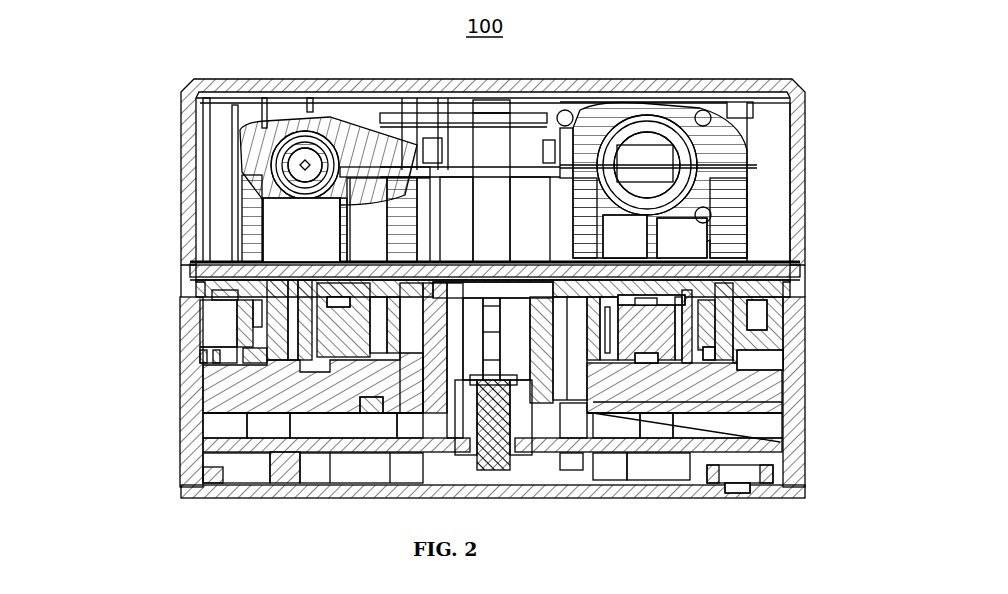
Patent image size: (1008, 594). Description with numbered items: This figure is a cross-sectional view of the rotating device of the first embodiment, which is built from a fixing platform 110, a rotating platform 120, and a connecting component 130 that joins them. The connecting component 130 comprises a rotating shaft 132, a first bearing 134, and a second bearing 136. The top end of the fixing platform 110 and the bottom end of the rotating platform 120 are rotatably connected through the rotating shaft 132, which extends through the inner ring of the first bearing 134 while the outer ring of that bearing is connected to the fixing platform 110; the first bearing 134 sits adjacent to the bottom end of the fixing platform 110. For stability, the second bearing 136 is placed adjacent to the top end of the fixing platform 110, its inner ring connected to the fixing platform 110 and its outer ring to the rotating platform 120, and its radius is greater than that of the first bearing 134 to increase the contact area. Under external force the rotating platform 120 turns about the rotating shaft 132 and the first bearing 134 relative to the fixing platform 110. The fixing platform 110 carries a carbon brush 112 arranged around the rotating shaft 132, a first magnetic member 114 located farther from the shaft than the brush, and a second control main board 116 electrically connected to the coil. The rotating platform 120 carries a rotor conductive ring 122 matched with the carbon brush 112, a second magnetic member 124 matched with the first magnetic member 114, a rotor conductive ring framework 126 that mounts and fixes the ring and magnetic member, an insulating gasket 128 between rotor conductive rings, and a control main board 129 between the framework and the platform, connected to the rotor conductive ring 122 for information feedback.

The fixing platform 110 is at (165, 303).
The carbon brush 112 is at (783, 403).
The first magnetic member 114 is at (805, 338).
The second control main board 116 is at (357, 452).
The rotating platform 120 is at (166, 216).
The rotor conductive ring 122 is at (590, 385).
The second magnetic member 124 is at (727, 303).
The rotor conductive ring framework 126 is at (670, 253).
The insulating gasket 128 is at (770, 488).
The control main board 129 is at (740, 180).
The connecting component 130 is at (70, 350).
The rotating shaft 132 is at (203, 452).
The first bearing 134 is at (280, 403).
The second bearing 136 is at (310, 345).